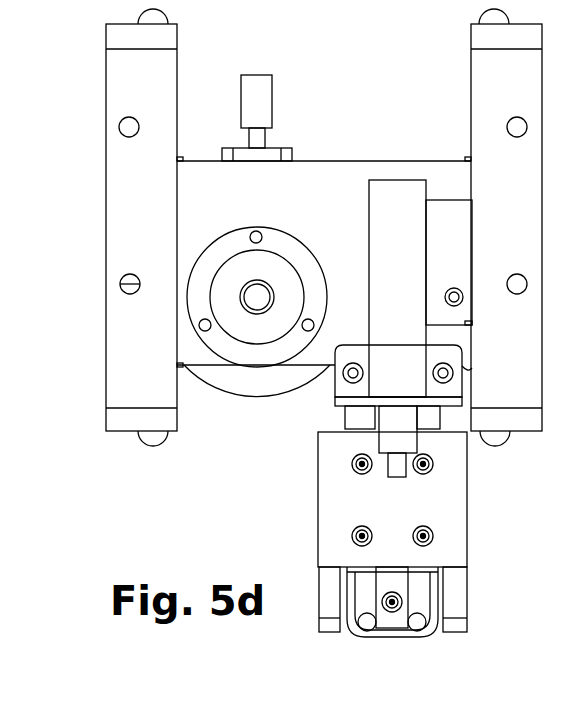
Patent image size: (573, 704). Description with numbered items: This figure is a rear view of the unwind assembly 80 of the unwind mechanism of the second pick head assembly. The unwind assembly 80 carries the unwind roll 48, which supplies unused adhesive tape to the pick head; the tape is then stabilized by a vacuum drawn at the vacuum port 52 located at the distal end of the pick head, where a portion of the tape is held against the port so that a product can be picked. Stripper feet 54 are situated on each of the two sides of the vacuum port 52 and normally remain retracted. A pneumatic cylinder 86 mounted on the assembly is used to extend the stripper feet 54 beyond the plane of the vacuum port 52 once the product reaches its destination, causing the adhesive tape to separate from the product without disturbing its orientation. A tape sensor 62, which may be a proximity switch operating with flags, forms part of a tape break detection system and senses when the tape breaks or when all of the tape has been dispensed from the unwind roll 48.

The unwind assembly 80 is at (62, 189).
The tape sensor 62 is at (255, 75).
The pneumatic cylinder 86 is at (393, 180).
The unwind roll 48 is at (256, 398).
The stripper feet 54 is at (467, 595).
The vacuum port 52 is at (403, 649).